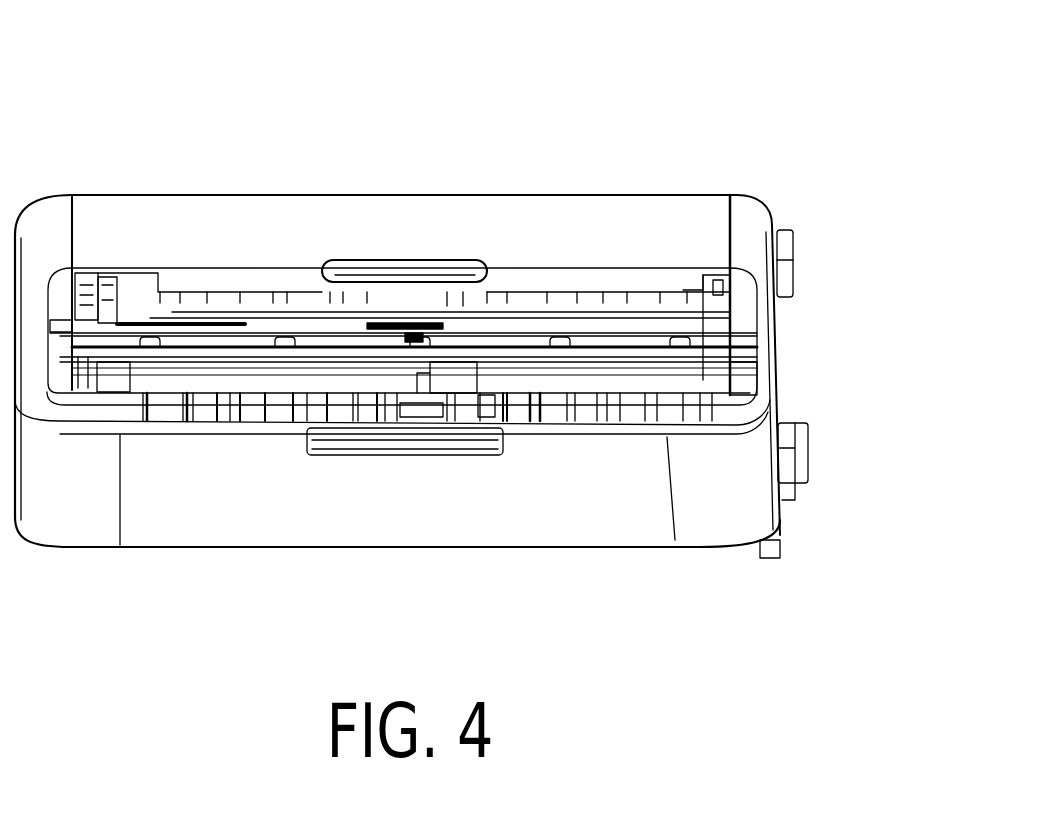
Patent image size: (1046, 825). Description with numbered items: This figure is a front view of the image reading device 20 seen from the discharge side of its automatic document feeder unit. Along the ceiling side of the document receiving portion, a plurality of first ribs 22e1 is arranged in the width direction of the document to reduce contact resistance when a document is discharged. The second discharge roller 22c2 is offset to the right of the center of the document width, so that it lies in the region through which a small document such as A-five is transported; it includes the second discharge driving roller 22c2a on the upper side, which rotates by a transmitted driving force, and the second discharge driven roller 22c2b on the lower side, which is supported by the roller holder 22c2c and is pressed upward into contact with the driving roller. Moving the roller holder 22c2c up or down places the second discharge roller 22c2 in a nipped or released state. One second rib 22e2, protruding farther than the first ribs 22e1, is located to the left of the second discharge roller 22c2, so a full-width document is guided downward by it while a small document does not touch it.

The image reading device 20 is at (706, 106).
The second discharge roller 22c2 is at (625, 111).
The second discharge driving roller 22c2a is at (440, 367).
The second discharge driven roller 22c2b is at (453, 383).
The roller holder 22c2c is at (478, 400).
The first ribs 22e1 is at (270, 360).
The second rib 22e2 is at (290, 360).